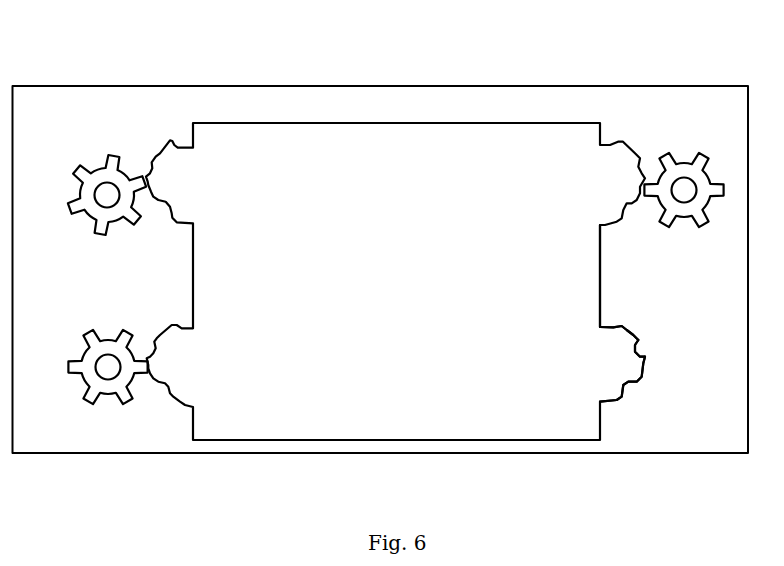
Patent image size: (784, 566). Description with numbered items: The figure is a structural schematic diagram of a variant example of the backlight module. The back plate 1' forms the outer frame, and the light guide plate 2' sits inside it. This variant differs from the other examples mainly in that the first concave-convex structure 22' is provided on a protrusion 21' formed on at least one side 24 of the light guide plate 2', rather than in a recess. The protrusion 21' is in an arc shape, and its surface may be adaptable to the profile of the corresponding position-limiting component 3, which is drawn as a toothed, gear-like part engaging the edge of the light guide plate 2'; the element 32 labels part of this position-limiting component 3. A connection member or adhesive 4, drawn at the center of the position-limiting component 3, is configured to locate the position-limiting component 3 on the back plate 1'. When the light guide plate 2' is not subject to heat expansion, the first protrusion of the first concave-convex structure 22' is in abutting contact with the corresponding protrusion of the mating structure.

The back plate 1' is at (381, 245).
The light guide plate 2' is at (443, 281).
The protrusion 21' is at (685, 328).
The first concave-convex structure 22' is at (670, 364).
The side 24 is at (603, 253).
The position-limiting component 3 is at (83, 179).
The gear teeth 32 is at (80, 168).
The connection member or adhesive 4 is at (99, 198).